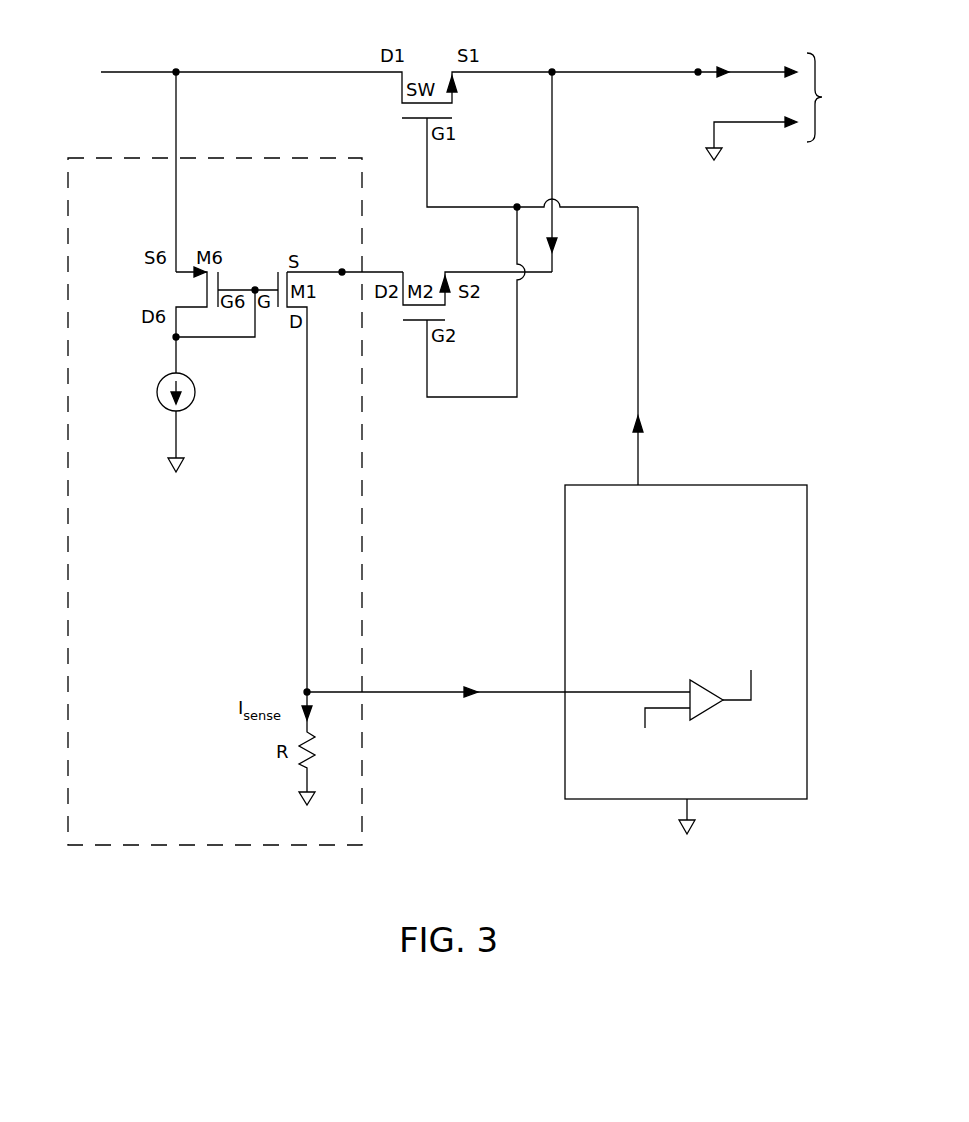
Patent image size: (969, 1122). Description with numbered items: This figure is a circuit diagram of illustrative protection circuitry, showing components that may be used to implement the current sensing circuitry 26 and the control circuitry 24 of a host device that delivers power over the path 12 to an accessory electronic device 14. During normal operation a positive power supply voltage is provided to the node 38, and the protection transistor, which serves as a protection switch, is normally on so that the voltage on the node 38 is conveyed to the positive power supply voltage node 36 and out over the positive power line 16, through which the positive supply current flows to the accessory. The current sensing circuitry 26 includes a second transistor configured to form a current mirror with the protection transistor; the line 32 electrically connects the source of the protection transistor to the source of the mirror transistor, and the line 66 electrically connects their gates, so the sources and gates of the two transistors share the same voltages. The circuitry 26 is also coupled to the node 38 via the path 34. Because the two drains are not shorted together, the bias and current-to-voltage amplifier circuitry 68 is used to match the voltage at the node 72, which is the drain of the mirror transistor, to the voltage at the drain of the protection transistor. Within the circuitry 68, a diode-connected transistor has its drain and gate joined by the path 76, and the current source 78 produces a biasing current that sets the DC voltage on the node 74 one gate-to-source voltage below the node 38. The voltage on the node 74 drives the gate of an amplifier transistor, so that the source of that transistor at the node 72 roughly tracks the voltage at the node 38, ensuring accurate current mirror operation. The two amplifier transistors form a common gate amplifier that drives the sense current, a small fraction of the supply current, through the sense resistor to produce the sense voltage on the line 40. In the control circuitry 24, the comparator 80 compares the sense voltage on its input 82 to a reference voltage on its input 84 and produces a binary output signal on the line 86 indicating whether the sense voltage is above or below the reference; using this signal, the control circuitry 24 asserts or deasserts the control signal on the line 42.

The path 12 is at (828, 97).
The electronic device 14 is at (760, 72).
The positive power line 16 is at (753, 124).
The control circuitry 24 is at (764, 485).
The current sensing circuitry 26 is at (457, 450).
The path 32 is at (552, 130).
The path 34 is at (176, 100).
The positive power supply voltage node 36 is at (698, 72).
The node 38 is at (176, 72).
The line 40 is at (487, 696).
The line 42 is at (638, 368).
The path 66 is at (517, 377).
The bias and current-to-voltage amplifier circuitry 68 is at (362, 597).
The node 72 is at (342, 272).
The node 74 is at (255, 290).
The path 76 is at (218, 340).
The current source 78 is at (157, 392).
The comparator 80 is at (707, 687).
The input 82 is at (662, 692).
The input 84 is at (668, 708).
The line 86 is at (735, 701).